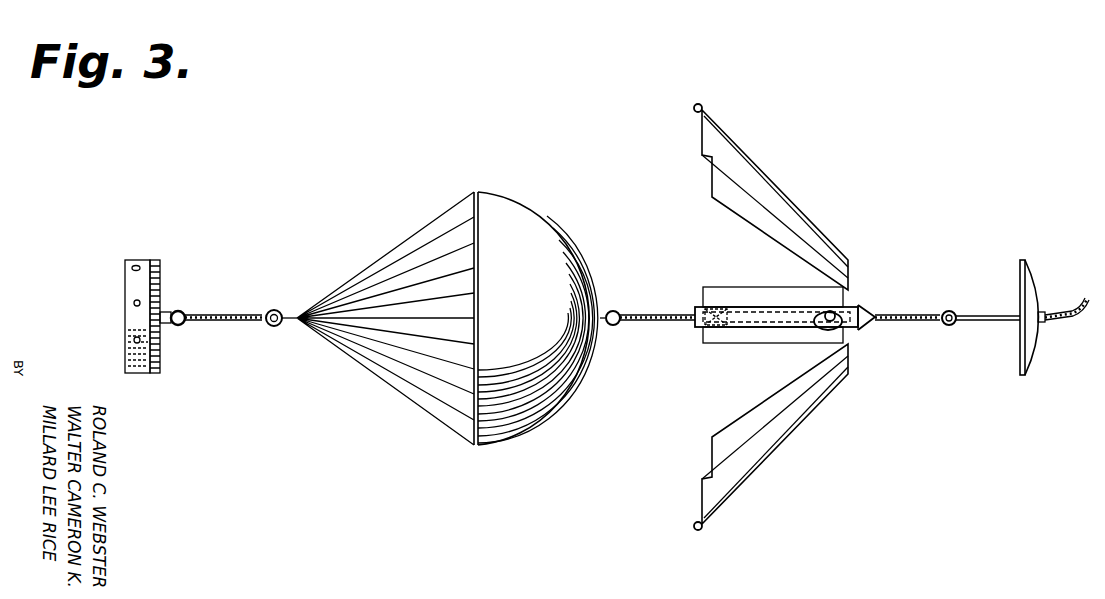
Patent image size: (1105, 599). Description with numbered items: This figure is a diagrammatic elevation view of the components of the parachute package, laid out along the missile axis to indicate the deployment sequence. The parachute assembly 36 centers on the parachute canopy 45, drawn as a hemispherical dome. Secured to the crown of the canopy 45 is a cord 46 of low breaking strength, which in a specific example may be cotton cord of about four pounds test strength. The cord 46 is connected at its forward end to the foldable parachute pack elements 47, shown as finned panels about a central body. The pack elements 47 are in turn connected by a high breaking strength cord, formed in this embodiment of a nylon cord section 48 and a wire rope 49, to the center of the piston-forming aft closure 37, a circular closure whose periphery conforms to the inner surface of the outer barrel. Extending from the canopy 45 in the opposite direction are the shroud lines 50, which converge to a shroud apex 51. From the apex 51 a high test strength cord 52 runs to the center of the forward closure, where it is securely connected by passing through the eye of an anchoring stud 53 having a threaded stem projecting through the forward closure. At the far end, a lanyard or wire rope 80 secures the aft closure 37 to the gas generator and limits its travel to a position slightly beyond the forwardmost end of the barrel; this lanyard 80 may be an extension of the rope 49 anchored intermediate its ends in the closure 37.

The parachute assembly 36 is at (641, 111).
The piston-forming aft closure 37 is at (1033, 281).
The parachute canopy 45 is at (557, 226).
The cord of low breaking strength 46 is at (650, 312).
The foldable parachute pack elements 47 is at (790, 196).
The nylon cord section 48 is at (900, 312).
The wire rope 49 is at (983, 312).
The shroud lines 50 is at (383, 263).
The shroud apex 51 is at (286, 312).
The high test strength cord 52 is at (212, 312).
The anchoring stud 53 is at (168, 310).
The lanyard or wire rope 80 is at (1057, 312).